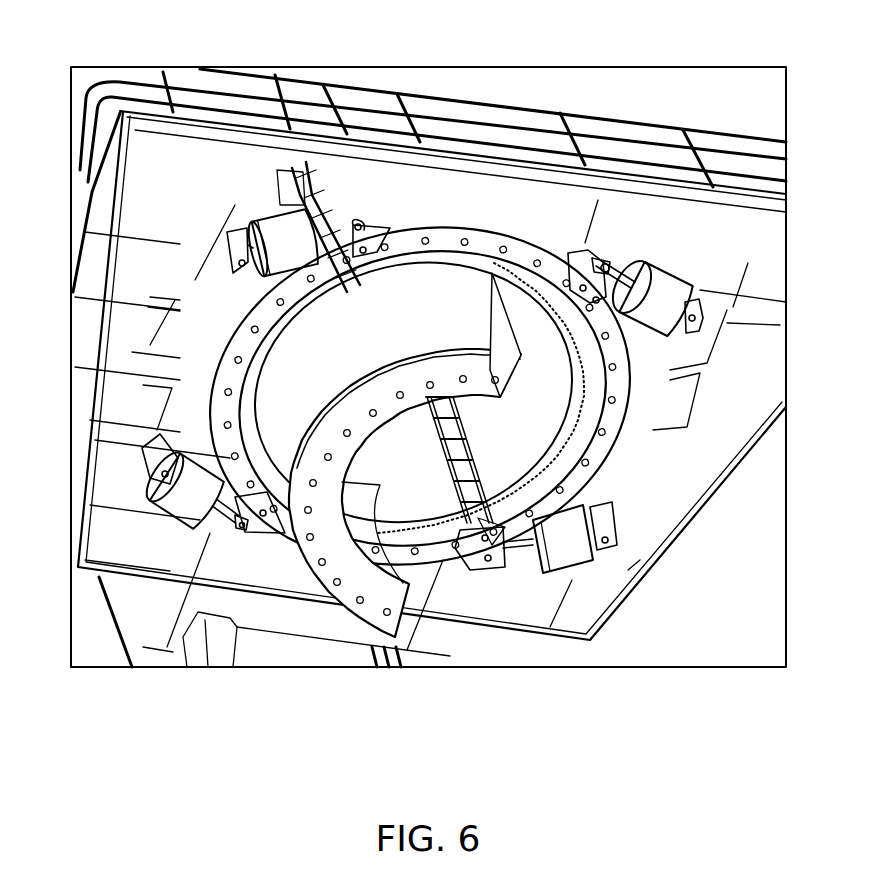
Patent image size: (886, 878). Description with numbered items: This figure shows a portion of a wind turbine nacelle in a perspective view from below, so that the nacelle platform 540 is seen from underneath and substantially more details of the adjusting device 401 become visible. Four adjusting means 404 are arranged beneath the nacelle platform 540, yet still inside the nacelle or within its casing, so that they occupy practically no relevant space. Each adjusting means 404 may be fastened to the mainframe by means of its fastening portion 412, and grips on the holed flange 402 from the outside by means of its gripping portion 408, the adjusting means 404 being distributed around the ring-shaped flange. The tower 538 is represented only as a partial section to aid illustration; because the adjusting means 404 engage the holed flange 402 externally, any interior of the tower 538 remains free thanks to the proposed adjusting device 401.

The adjusting device 401 is at (432, 371).
The holed flange 402 is at (625, 408).
The adjusting means 404 is at (270, 228).
The gripping portion 408 is at (385, 224).
The fastening portion 412 is at (226, 254).
The tower 538 is at (386, 355).
The nacelle platform 540 is at (655, 492).